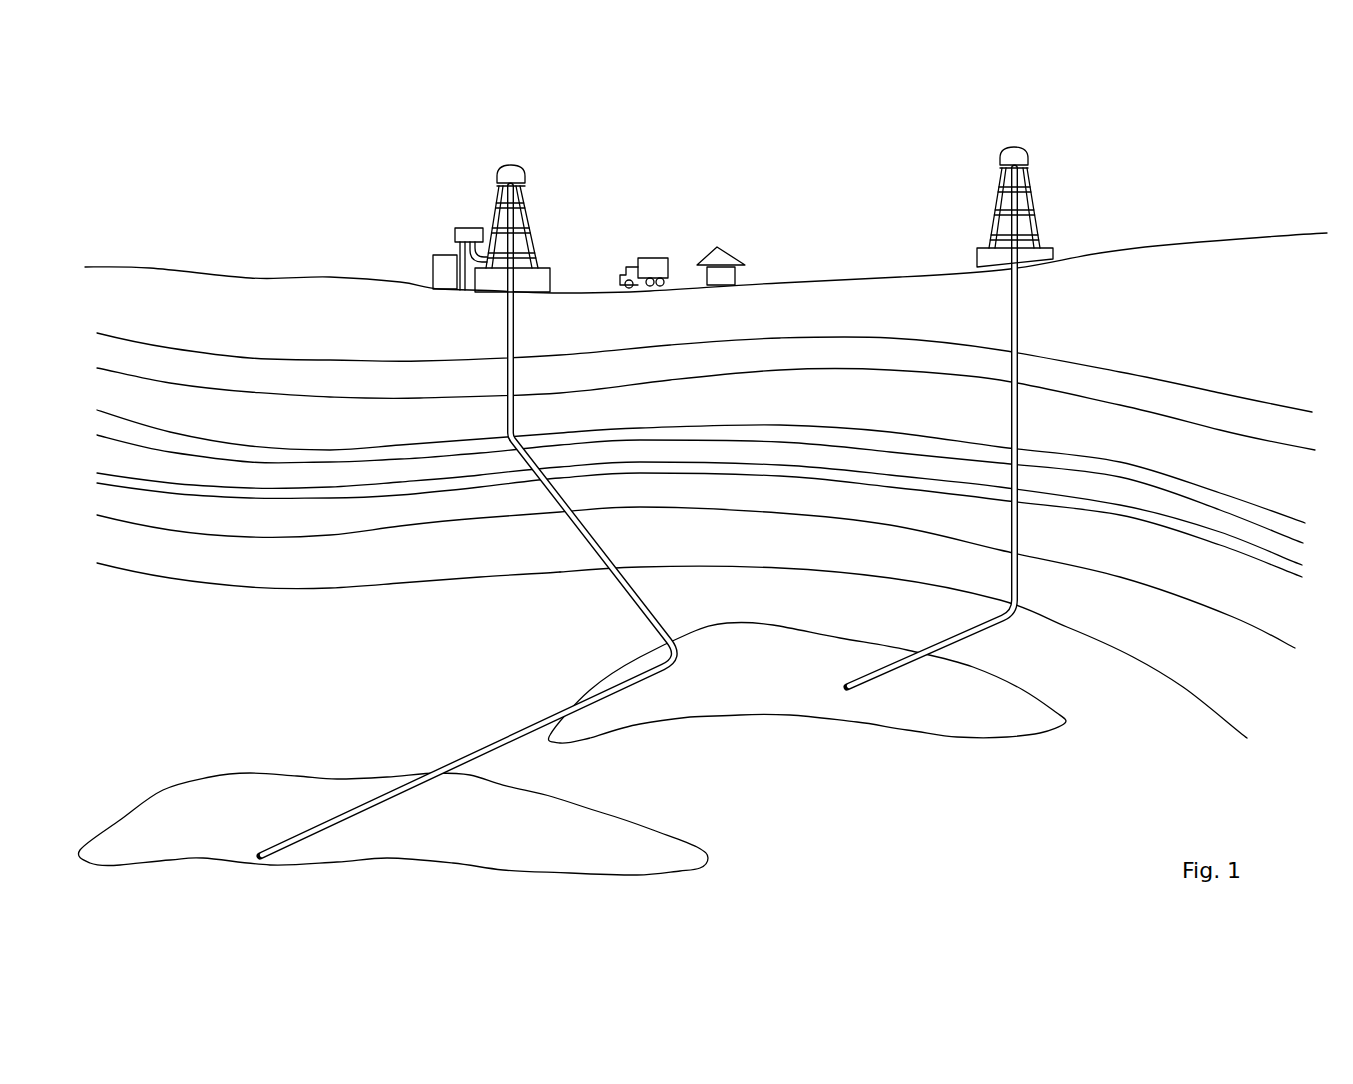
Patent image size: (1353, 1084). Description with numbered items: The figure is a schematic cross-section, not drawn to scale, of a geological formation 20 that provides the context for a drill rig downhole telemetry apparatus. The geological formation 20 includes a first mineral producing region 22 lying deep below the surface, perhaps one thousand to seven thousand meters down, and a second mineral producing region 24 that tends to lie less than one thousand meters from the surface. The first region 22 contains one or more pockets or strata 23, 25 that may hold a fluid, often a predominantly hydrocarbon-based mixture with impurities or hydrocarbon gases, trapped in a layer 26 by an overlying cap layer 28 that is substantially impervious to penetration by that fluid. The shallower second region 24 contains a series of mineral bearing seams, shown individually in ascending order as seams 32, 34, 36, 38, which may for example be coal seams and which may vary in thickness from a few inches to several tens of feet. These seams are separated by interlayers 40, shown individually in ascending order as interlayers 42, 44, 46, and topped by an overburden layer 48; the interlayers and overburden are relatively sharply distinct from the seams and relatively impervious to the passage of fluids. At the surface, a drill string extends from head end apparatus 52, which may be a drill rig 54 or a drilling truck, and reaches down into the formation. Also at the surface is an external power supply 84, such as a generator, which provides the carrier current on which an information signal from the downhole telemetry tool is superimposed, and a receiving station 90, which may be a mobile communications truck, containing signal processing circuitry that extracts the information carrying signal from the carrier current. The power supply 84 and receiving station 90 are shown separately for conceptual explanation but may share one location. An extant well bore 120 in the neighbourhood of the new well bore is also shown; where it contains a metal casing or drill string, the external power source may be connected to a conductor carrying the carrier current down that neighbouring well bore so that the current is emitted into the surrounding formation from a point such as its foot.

The geological formation 20 is at (650, 140).
The first mineral producing region 22 is at (172, 676).
The pocket or stratum 23 is at (177, 823).
The second mineral producing region 24 is at (158, 592).
The pocket or stratum 25 is at (905, 717).
The layer 26 is at (218, 797).
The cap layer 28 is at (845, 608).
The mineral bearing seam 32 is at (273, 563).
The mineral bearing seam 34 is at (200, 495).
The mineral bearing seam 36 is at (210, 450).
The mineral bearing seam 38 is at (207, 370).
The interlayers 40 is at (335, 517).
The interlayer 42 is at (367, 508).
The interlayer 44 is at (288, 472).
The interlayer 46 is at (307, 408).
The overburden layer 48 is at (317, 302).
The head end apparatus 52 is at (506, 163).
The drill rig 54 is at (520, 167).
The power supply 84 is at (733, 257).
The receiving station 90 is at (650, 257).
The extant well bore 120 is at (1020, 302).